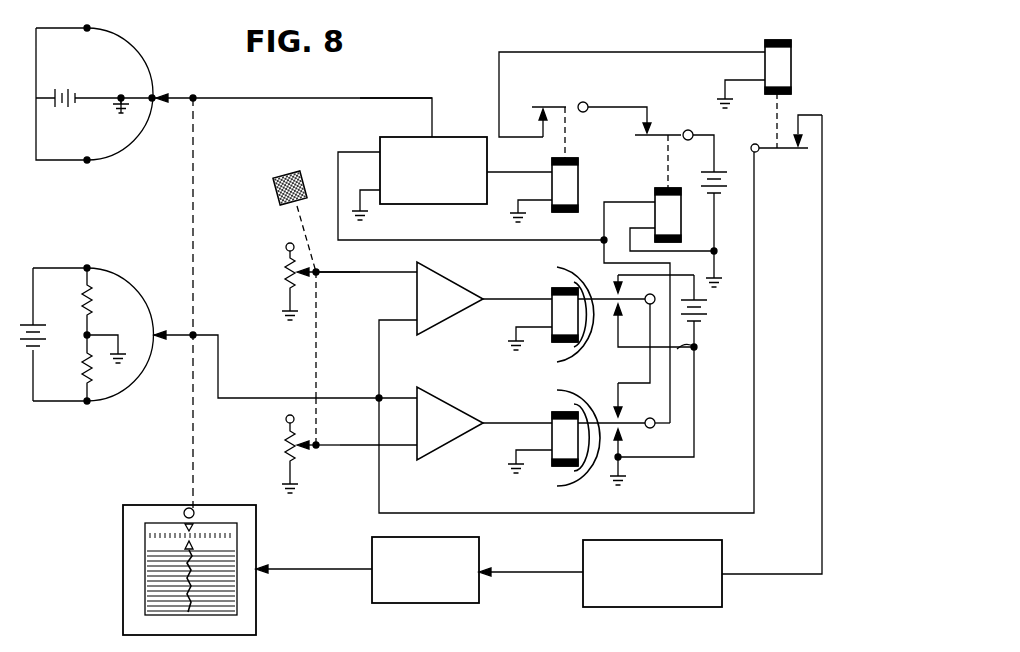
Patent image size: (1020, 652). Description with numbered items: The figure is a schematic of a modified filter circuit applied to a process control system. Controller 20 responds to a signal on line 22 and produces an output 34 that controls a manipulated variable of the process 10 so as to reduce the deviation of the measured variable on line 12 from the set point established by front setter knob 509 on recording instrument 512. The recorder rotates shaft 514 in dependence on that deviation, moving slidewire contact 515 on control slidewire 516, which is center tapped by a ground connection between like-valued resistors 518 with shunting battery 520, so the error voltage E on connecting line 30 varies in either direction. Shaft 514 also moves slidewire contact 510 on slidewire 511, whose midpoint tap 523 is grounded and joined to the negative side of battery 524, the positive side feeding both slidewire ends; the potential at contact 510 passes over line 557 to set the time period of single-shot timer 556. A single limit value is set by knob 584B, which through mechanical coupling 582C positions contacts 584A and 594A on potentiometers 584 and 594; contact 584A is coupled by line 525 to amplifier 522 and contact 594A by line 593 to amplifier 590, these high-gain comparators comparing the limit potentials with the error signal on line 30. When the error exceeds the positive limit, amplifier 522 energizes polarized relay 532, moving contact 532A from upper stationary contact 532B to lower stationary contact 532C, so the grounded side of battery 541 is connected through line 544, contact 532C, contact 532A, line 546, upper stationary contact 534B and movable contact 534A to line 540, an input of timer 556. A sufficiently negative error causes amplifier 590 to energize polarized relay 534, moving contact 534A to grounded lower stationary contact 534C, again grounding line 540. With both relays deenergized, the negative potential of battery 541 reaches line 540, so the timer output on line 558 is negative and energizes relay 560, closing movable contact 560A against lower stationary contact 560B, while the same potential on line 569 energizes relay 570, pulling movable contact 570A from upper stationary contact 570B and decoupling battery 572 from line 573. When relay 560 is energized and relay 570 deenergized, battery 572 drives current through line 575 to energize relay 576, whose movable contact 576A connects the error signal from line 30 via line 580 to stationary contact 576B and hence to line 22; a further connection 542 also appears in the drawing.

The process 10 is at (460, 537).
The line 12 is at (314, 570).
The controller 20 is at (690, 540).
The line 22 is at (822, 437).
The connecting line 30 is at (212, 336).
The output 34 is at (533, 572).
The front setter knob 509 is at (195, 508).
The slidewire contact 510 is at (165, 96).
The slidewire 511 is at (136, 47).
The recording instrument 512 is at (256, 612).
The shaft 514 is at (188, 194).
The slidewire contact 515 is at (175, 340).
The control slidewire 516 is at (138, 284).
The resistors 518 is at (91, 293).
The shunting battery 520 is at (25, 352).
The amplifier 522 is at (456, 278).
The tap 523 is at (152, 97).
The battery 524 is at (72, 83).
The line 525 is at (389, 276).
The polarized relay 532 is at (553, 291).
The movable contact 532A is at (616, 338).
The upper stationary contact 532B is at (621, 290).
The lower stationary contact 532C is at (618, 323).
The polarized relay 534 is at (553, 414).
The movable contact 534A is at (648, 428).
The upper stationary contact 534B is at (620, 413).
The lower stationary contact 534C is at (603, 457).
The line 540 is at (478, 240).
The battery 541 is at (705, 313).
The line 542 is at (695, 388).
The line 544 is at (700, 342).
The line 546 is at (652, 369).
The single-shot timer 556 is at (466, 137).
The line 557 is at (392, 98).
The output line 558 is at (528, 172).
The relay 560 is at (579, 190).
The movable contact 560A is at (563, 104).
The lower stationary contact 560B is at (540, 118).
The line 569 is at (632, 202).
The relay 570 is at (682, 215).
The movable contact 570A is at (682, 132).
The upper stationary contact 570B is at (647, 136).
The battery 572 is at (727, 185).
The line 573 is at (620, 107).
The line 575 is at (648, 52).
The relay 576 is at (765, 43).
The movable contact 576A is at (787, 152).
The stationary contact 576B is at (790, 133).
The line 580 is at (458, 513).
The mechanical coupling 582C is at (319, 328).
The potentiometer 584 is at (296, 272).
The movable contact 584A is at (311, 272).
The knob 584B is at (287, 174).
The amplifier 590 is at (459, 401).
The line 593 is at (364, 447).
The potentiometer 594 is at (296, 445).
The movable contact 594A is at (311, 443).